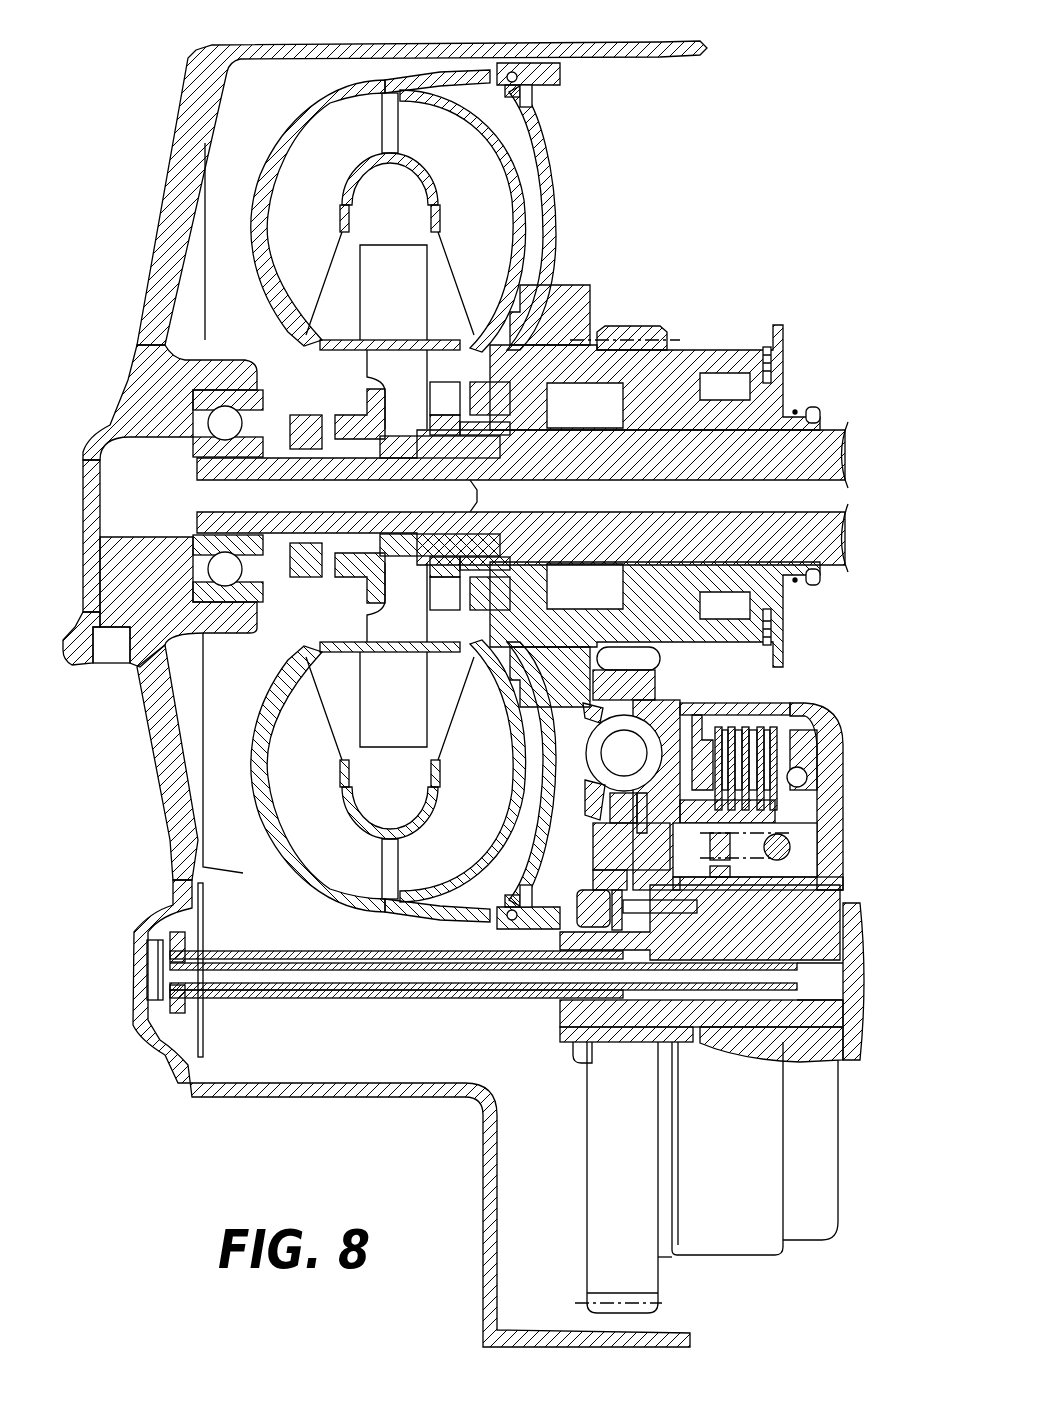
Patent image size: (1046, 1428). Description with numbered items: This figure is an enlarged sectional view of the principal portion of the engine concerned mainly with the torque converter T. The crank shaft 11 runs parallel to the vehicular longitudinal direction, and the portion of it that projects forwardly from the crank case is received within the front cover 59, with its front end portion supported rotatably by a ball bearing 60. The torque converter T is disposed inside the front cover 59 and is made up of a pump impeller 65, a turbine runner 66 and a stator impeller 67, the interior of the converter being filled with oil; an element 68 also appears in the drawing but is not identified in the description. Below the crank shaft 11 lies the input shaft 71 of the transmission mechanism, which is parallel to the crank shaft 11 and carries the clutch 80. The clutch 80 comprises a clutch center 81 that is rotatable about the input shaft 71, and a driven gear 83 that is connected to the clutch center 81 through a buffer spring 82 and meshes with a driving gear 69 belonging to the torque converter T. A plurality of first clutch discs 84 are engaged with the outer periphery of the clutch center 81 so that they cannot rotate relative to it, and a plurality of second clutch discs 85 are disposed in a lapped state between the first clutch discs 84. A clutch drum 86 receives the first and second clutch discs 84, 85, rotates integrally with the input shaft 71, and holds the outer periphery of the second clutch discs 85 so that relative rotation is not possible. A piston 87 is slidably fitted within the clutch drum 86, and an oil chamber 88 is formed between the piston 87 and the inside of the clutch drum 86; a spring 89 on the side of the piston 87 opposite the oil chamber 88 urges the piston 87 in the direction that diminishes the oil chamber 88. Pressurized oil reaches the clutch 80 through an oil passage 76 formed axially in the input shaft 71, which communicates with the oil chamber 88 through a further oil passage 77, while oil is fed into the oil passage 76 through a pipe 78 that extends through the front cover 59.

The torque converter T is at (308, 85).
The crank shaft 11 is at (828, 445).
The front cover 59 is at (157, 250).
The ball bearing 60 is at (215, 420).
The pump impeller 65 is at (297, 178).
The turbine runner 66 is at (455, 145).
The stator impeller 67 is at (383, 298).
The stator support 68 is at (560, 290).
The driving gear 69 is at (640, 332).
The input shaft 71 is at (843, 1063).
The oil passage 76 is at (822, 970).
The oil passage 77 is at (838, 930).
The pipe 78 is at (265, 1012).
The clutch 80 is at (834, 694).
The clutch center 81 is at (655, 710).
The buffer spring 82 is at (605, 780).
The driven gear 83 is at (668, 660).
The first clutch discs 84 is at (765, 712).
The second clutch discs 85 is at (825, 758).
The clutch drum 86 is at (830, 825).
The piston 87 is at (808, 843).
The oil chamber 88 is at (818, 790).
The spring 89 is at (790, 824).